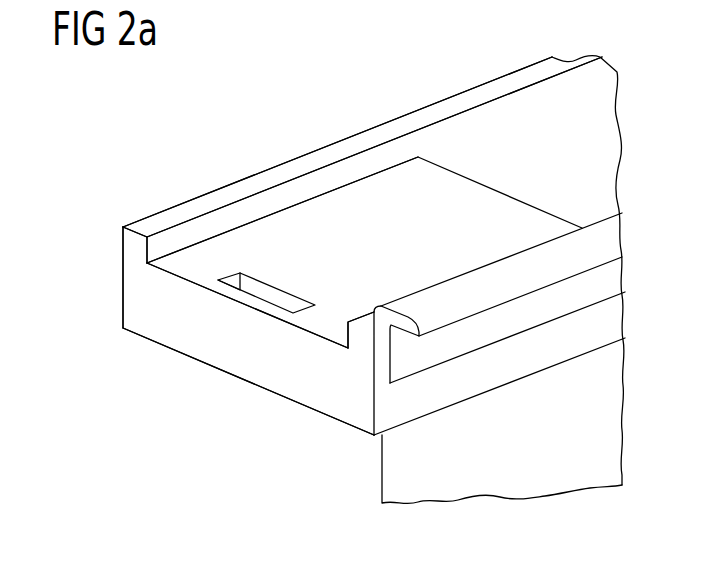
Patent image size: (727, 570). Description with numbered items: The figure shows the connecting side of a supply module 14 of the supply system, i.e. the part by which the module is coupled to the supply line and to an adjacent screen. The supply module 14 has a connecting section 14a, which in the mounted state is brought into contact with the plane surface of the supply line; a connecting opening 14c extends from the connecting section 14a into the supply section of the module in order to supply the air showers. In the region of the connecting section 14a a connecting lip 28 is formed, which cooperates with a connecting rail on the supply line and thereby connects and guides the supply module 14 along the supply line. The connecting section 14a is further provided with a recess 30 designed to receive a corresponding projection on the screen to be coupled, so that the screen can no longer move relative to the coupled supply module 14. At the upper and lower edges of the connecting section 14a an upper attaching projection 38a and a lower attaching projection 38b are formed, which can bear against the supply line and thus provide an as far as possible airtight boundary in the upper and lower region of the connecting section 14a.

The supply module 14 is at (188, 160).
The connecting section 14a is at (230, 358).
The connecting opening 14c is at (508, 157).
The connecting lip 28 is at (422, 353).
The recess 30 is at (277, 297).
The upper attaching projection 38a is at (120, 242).
The lower attaching projection 38b is at (353, 336).